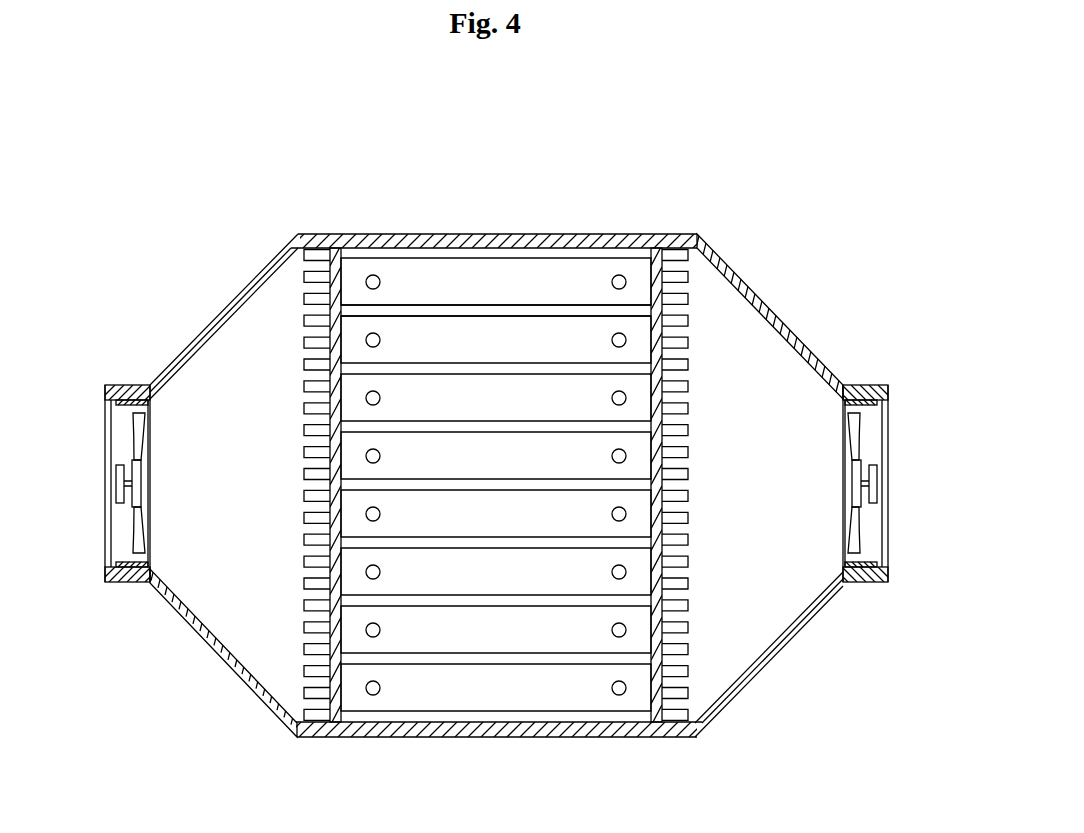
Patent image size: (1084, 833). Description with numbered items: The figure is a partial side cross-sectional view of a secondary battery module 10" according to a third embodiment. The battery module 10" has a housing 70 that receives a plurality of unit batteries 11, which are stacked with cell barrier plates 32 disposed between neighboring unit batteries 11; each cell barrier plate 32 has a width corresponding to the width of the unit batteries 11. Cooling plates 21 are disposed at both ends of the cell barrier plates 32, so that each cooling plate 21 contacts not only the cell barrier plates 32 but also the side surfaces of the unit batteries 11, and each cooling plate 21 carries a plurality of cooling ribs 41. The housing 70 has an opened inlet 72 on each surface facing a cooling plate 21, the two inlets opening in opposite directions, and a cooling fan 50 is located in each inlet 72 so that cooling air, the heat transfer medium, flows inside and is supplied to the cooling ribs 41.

The battery module 10 is at (734, 158).
The unit battery 11 is at (528, 275).
The cooling plate 21 is at (650, 702).
The cell barrier plate 32 is at (484, 312).
The cooling rib 41 is at (303, 672).
The cooling fan 50 is at (112, 528).
The housing 70 is at (786, 650).
The inlet 72 is at (105, 445).